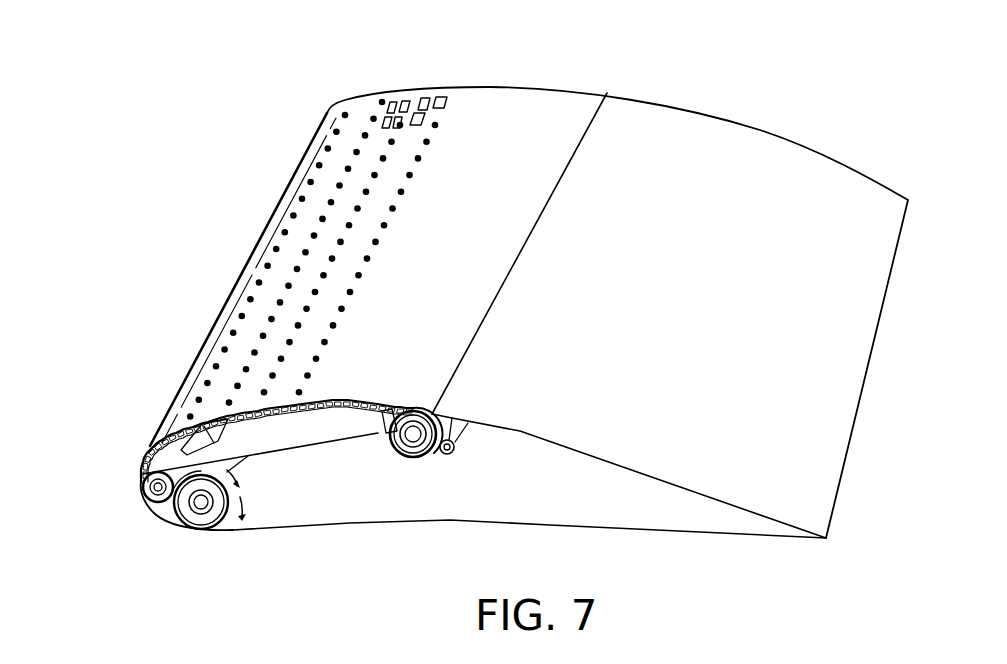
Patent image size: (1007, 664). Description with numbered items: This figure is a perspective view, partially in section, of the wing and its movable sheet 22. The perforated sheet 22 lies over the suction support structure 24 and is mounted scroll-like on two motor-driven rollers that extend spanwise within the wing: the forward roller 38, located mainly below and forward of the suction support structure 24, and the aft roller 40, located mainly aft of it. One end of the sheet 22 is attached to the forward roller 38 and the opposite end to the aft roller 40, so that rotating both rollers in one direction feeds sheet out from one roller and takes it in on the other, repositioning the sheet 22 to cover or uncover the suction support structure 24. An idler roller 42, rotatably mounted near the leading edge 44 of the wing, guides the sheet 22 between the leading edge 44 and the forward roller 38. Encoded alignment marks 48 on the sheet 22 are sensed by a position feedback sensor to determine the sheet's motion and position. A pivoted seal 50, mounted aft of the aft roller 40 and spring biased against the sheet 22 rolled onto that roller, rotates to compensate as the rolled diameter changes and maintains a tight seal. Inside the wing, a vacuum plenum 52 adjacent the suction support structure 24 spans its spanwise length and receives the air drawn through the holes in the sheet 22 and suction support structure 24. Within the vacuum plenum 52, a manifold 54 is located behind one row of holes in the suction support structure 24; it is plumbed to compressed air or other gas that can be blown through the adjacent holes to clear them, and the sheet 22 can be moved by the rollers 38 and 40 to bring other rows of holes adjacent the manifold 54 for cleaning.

The sheet 22 is at (230, 303).
The suction support structure 24 is at (342, 402).
The forward roller 38 is at (180, 528).
The aft roller 40 is at (407, 458).
The idler roller 42 is at (153, 505).
The leading edge 44 is at (142, 464).
The encoded alignment marks 48 is at (447, 90).
The pivoted seal 50 is at (460, 437).
The vacuum plenum 52 is at (288, 448).
The manifold 54 is at (183, 430).